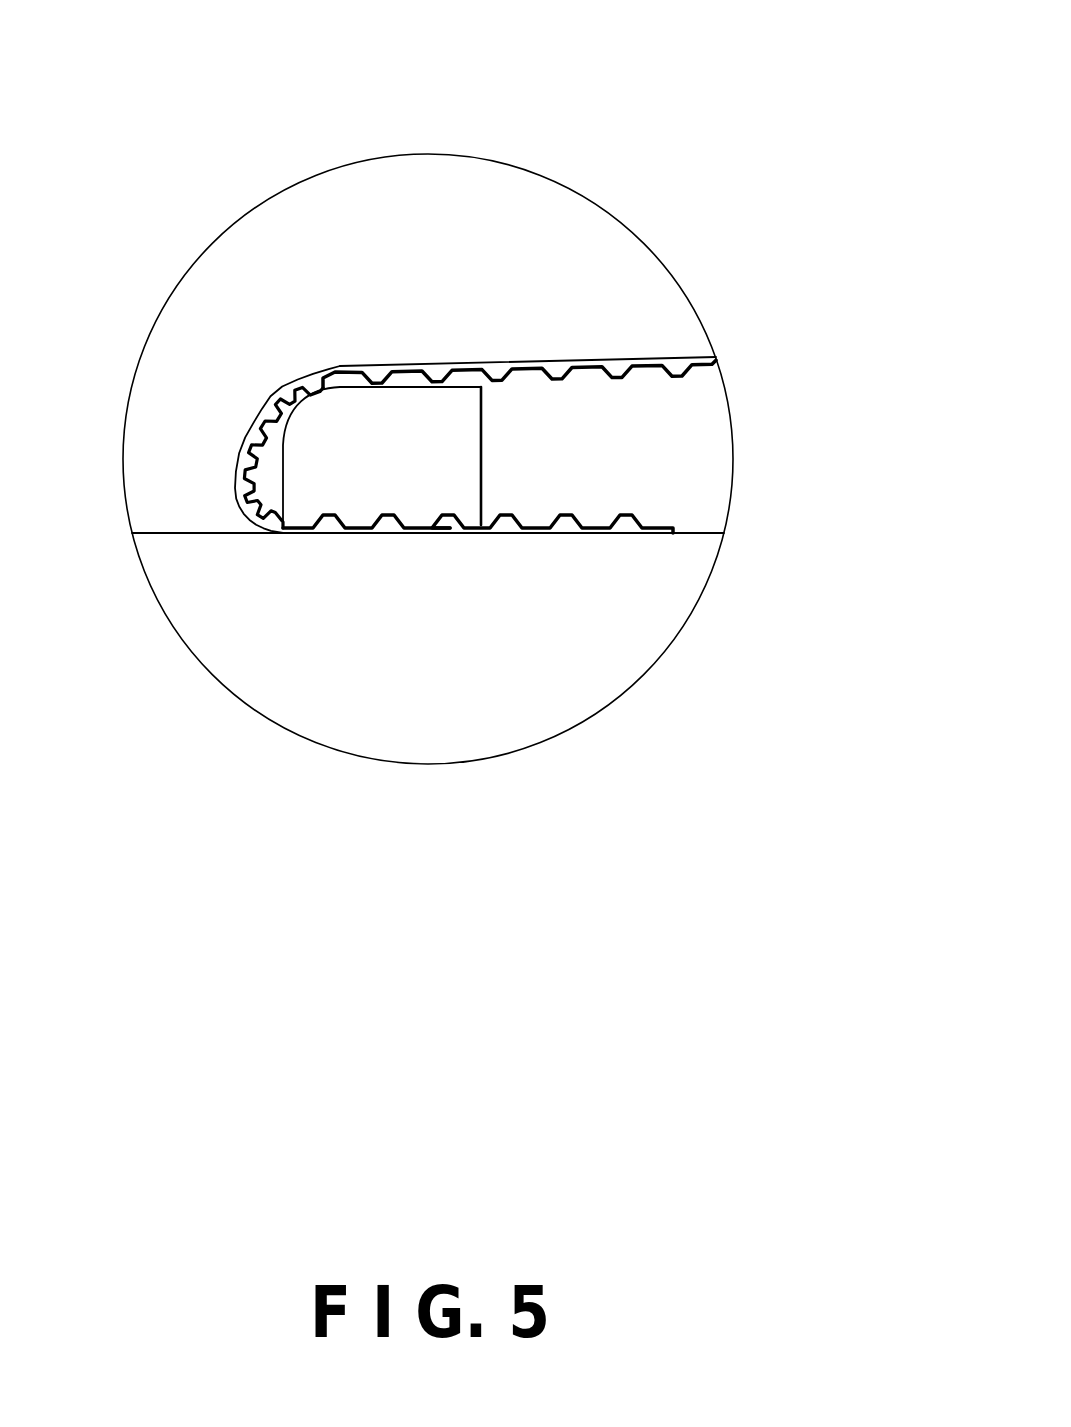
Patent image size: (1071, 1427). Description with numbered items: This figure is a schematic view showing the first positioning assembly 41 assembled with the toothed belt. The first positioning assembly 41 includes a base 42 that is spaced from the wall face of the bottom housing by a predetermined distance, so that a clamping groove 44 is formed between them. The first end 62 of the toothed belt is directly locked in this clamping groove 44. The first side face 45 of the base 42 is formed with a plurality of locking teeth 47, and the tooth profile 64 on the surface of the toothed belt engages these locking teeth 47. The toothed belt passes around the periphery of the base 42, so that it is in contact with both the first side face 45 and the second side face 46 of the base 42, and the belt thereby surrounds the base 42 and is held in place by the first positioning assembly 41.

The first positioning assembly 41 is at (556, 466).
The base 42 is at (402, 443).
The clamping groove 44 is at (296, 524).
The first side face 45 is at (475, 527).
The second side face 46 is at (348, 387).
The locking teeth 47 is at (418, 525).
The first end 62 is at (532, 531).
The tooth profile 64 is at (391, 529).